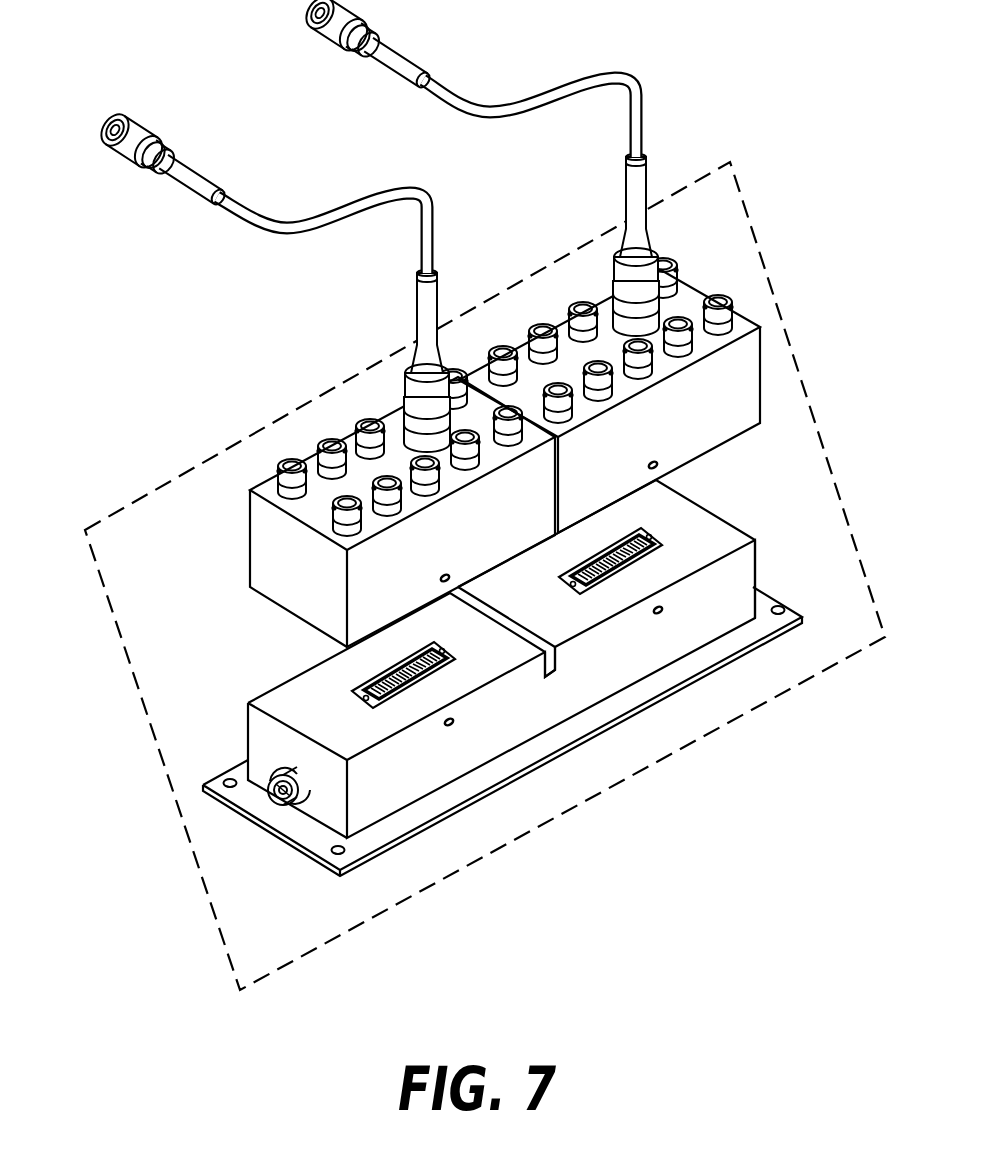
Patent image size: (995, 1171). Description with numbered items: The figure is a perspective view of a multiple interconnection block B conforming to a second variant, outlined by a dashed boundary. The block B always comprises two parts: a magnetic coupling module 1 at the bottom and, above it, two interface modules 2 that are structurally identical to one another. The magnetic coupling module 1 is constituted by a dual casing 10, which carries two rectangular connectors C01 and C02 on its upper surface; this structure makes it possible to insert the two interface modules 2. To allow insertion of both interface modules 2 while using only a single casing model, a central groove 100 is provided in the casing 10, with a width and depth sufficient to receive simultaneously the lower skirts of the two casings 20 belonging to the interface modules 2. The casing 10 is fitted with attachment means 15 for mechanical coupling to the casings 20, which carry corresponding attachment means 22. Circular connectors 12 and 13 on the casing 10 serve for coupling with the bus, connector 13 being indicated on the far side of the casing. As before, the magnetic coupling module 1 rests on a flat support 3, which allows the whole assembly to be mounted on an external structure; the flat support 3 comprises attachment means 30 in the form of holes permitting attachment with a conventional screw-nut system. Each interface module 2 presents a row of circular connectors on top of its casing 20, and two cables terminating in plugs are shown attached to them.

The magnetic coupling module 1 is at (469, 455).
The interface module 2 is at (460, 323).
The flat support 3 is at (497, 736).
The dual casing 10 is at (514, 677).
The connector 12 is at (272, 776).
The connector 13 is at (738, 570).
The attachment means 15 is at (455, 723).
The casing 20 is at (510, 458).
The attachment means 22 is at (447, 576).
The attachment means 30 is at (229, 790).
The central groove 100 is at (558, 668).
The rectangular connector C01 is at (421, 651).
The rectangular connector C02 is at (628, 538).
The interconnection block B is at (119, 508).